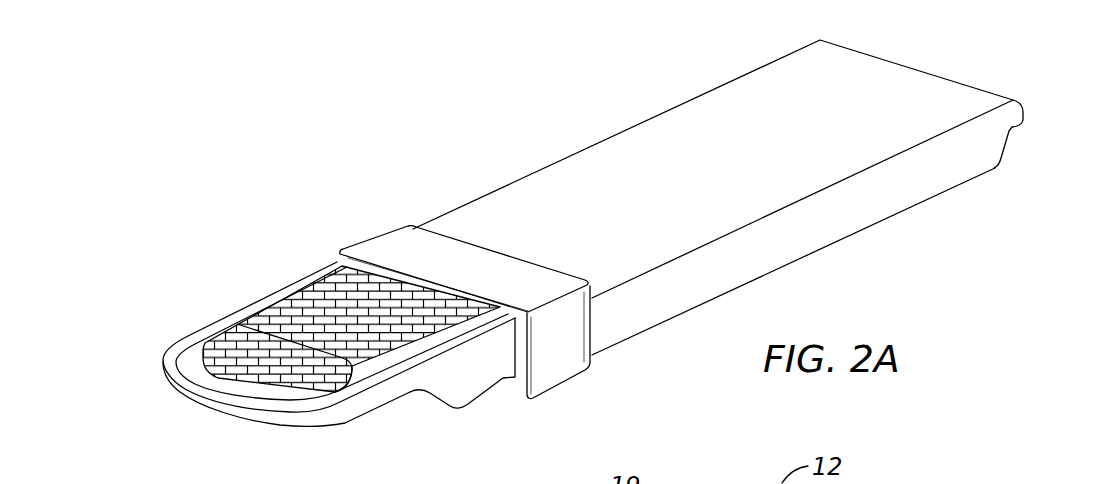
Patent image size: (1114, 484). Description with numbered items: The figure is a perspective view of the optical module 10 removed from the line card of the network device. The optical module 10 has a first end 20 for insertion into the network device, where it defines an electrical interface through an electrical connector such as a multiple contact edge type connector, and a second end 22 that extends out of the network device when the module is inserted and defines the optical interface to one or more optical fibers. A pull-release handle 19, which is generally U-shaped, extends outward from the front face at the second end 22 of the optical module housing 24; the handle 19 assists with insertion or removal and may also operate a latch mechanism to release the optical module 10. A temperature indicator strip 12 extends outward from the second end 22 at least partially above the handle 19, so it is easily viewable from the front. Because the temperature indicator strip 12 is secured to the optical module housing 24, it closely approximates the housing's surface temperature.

The optical module 10 is at (778, 87).
The temperature indicator strip 12 is at (317, 312).
The pull-release handle 19 is at (330, 413).
The first end 20 is at (1007, 147).
The second end 22 is at (520, 393).
The optical module housing 24 is at (405, 243).